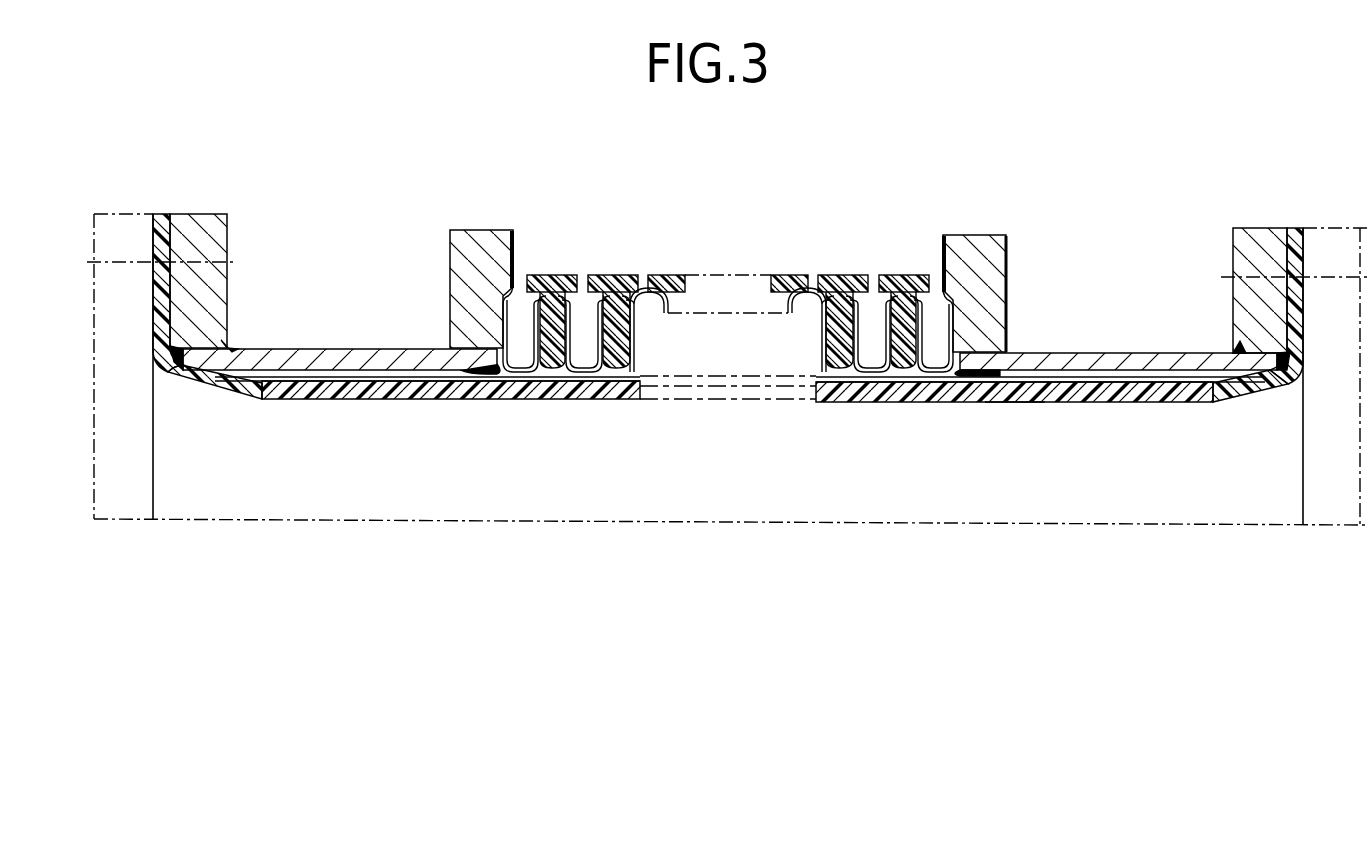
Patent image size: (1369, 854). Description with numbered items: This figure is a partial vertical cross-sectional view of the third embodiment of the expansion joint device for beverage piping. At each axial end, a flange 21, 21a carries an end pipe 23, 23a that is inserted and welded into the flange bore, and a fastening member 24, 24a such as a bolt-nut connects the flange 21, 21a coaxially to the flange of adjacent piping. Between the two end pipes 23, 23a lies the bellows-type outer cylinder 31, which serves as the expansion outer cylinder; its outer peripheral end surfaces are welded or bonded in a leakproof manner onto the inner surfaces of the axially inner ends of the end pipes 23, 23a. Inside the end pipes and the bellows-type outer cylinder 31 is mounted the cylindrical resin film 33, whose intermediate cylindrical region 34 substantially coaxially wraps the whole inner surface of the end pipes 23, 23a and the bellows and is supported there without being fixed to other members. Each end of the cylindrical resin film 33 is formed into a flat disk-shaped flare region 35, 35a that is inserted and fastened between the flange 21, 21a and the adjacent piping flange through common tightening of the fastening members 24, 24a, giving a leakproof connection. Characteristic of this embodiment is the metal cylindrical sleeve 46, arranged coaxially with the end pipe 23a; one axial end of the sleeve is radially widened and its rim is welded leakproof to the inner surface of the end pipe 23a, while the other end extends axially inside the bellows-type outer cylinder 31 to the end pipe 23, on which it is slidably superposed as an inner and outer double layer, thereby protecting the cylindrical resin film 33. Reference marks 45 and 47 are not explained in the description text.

The flange 21 is at (1250, 236).
The flange 21a is at (196, 226).
The end pipe 23 is at (1062, 352).
The end pipe 23a is at (344, 358).
The fastening member 24 is at (1221, 277).
The fastening member 24a is at (234, 262).
The bellows-type outer cylinder 31 is at (512, 300).
The cylindrical resin film 33 is at (310, 398).
The intermediate cylindrical region 34 is at (566, 400).
The flare region 35 is at (1298, 228).
The flare region 35a is at (162, 214).
The lower surface 45 is at (1012, 400).
The metal cylindrical sleeve 46 is at (429, 378).
The curved corner portion 47 is at (1186, 393).